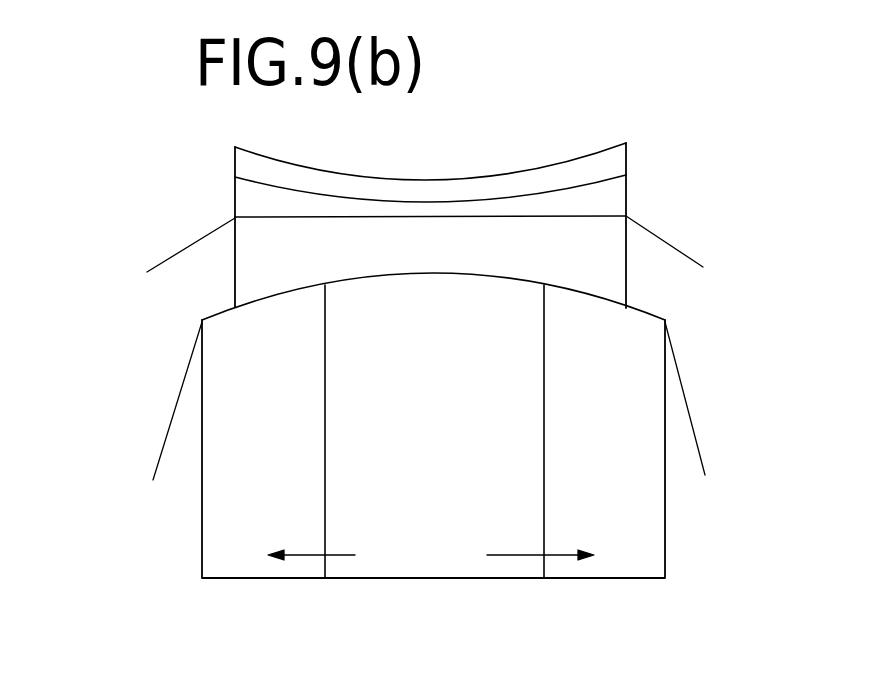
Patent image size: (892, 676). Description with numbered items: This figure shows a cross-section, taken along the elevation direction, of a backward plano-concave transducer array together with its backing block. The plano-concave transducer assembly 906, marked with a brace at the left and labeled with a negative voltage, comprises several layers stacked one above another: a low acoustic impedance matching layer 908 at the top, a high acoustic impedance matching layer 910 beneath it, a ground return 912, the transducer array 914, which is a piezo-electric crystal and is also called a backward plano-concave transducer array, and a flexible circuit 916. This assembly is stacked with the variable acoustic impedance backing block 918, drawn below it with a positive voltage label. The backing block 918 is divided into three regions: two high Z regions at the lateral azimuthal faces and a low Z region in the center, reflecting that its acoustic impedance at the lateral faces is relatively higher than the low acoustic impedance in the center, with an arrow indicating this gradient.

The plano-concave transducer assembly 906 is at (145, 142).
The low acoustic impedance matching layer 908 is at (605, 170).
The high acoustic impedance matching layer 910 is at (598, 202).
The ground return 912 is at (673, 247).
The plano-concave transducer array 914 is at (605, 272).
The flexible circuit 916 is at (695, 427).
The variable acoustic impedance backing block 918 is at (622, 534).